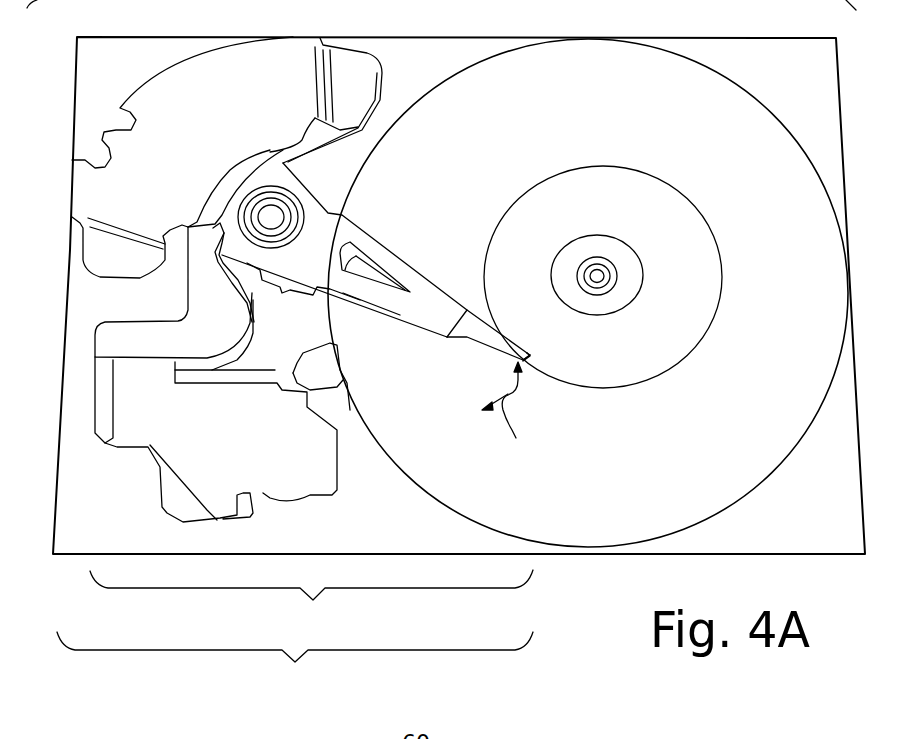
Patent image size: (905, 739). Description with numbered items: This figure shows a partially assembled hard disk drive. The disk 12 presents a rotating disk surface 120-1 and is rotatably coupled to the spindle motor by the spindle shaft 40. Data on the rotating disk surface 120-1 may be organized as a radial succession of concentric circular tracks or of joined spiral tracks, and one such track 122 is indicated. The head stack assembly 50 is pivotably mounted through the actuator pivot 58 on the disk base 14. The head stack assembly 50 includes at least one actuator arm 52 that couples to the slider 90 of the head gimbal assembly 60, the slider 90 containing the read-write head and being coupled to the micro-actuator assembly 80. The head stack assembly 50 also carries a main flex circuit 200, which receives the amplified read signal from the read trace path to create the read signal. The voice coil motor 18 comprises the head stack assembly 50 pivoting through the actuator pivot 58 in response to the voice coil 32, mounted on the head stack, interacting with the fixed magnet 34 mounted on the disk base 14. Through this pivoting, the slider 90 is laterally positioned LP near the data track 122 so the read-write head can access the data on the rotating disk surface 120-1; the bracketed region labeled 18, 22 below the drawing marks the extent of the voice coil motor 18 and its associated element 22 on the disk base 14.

The disk base 14 is at (76, 101).
The fixed magnet 34 is at (214, 100).
The voice coil 32 is at (267, 157).
The actuator pivot 58 is at (271, 217).
The main flex circuit 200 is at (298, 290).
The actuator arm 52 is at (435, 301).
The head gimbal assembly 60 is at (478, 345).
The micro-actuator assembly 80 is at (581, 391).
The slider 90 is at (528, 358).
The laterally positioned LP is at (508, 413).
The disk 12 is at (588, 293).
The rotating disk surface 120-1 is at (677, 107).
The track 122 is at (723, 261).
The spindle shaft 40 is at (600, 283).
The head stack assembly 50 is at (311, 605).
The voice coil motor 18 is at (295, 667).
The housing 22 is at (295, 647).